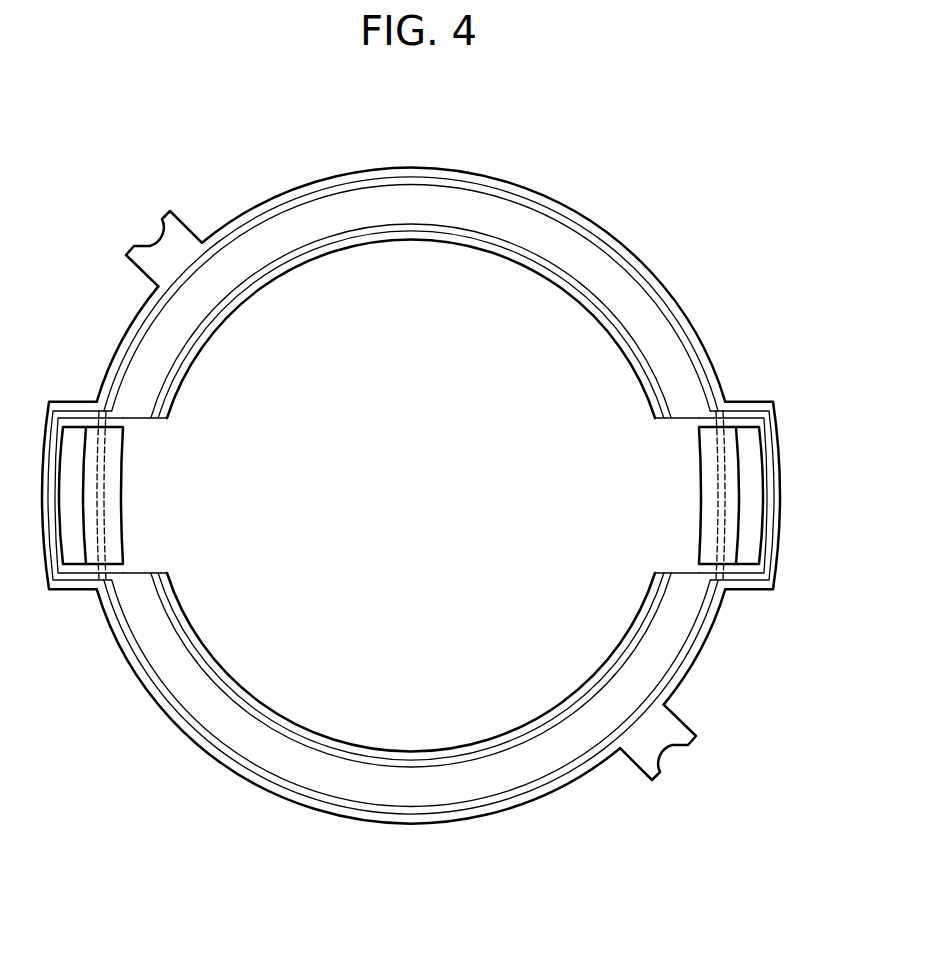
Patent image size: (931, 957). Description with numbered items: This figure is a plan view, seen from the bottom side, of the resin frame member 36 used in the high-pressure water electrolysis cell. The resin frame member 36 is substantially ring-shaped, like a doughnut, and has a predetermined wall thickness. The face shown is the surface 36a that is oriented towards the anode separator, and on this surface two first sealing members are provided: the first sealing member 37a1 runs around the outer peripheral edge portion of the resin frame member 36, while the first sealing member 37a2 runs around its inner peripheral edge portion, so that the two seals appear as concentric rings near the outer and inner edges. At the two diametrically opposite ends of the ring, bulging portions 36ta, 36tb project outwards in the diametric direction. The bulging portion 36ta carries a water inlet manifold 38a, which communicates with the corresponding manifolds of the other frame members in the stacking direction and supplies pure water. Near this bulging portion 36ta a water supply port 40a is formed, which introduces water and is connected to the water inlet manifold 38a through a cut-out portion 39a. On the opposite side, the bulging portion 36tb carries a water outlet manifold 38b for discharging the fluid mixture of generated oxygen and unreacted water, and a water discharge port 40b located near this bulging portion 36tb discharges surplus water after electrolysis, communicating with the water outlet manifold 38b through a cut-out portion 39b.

The resin frame member 36 is at (508, 90).
The surface 36a is at (532, 223).
The first sealing member 37a1 is at (133, 350).
The first sealing member 37a2 is at (200, 337).
The bulging portion 36ta is at (62, 592).
The bulging portion 36tb is at (747, 402).
The water inlet manifold 38a is at (72, 473).
The cut-out portion 39a is at (107, 492).
The water supply port 40a is at (148, 548).
The water outlet manifold 38b is at (750, 472).
The cut-out portion 39b is at (713, 487).
The water discharge port 40b is at (672, 532).